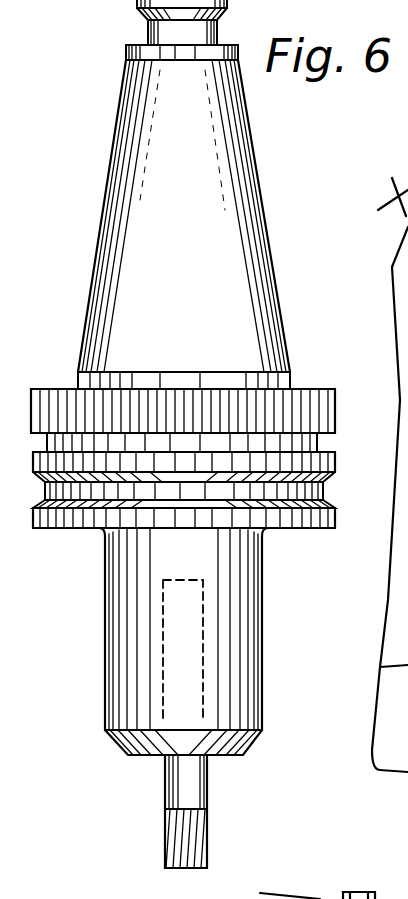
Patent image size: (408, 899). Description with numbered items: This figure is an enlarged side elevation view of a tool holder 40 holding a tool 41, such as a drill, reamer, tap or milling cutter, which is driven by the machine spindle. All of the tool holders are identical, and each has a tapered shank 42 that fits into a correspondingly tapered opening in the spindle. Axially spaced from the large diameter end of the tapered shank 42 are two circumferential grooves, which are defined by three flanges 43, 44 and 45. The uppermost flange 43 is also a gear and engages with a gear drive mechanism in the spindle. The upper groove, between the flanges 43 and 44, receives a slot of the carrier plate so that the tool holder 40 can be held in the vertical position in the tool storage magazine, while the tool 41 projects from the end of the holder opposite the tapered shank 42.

The tool holder 40 is at (90, 580).
The tool 41 is at (212, 825).
The tapered shank 42 is at (123, 188).
The uppermost flange 43 is at (63, 398).
The flange 44 is at (333, 462).
The flange 45 is at (333, 511).